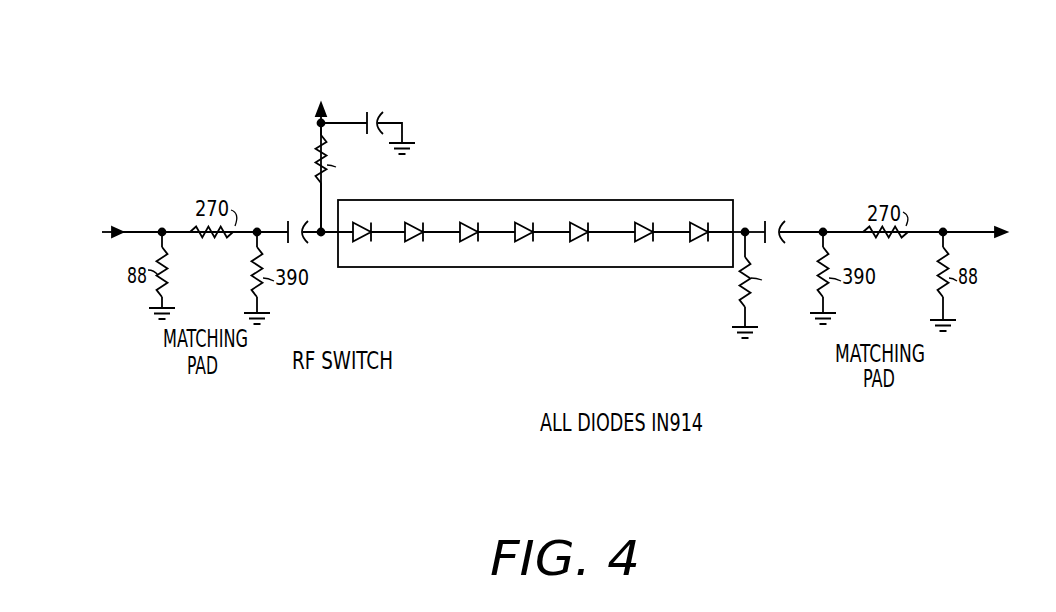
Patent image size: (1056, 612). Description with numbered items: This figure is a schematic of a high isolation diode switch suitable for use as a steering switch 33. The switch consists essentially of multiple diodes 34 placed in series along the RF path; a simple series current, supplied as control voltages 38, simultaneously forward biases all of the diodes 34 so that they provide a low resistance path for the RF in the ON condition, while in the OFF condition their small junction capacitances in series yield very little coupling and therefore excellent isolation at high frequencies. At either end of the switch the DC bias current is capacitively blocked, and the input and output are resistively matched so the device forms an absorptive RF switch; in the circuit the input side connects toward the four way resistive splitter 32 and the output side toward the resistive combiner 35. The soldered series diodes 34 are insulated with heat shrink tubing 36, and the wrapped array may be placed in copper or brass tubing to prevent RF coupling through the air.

The four way resistive splitter 32 is at (126, 204).
The steering switch 33 is at (606, 147).
The diodes 34 is at (411, 223).
The resistive combiner 35 is at (989, 229).
The heat shrink tubing 36 is at (535, 216).
The voltages 38 is at (318, 113).